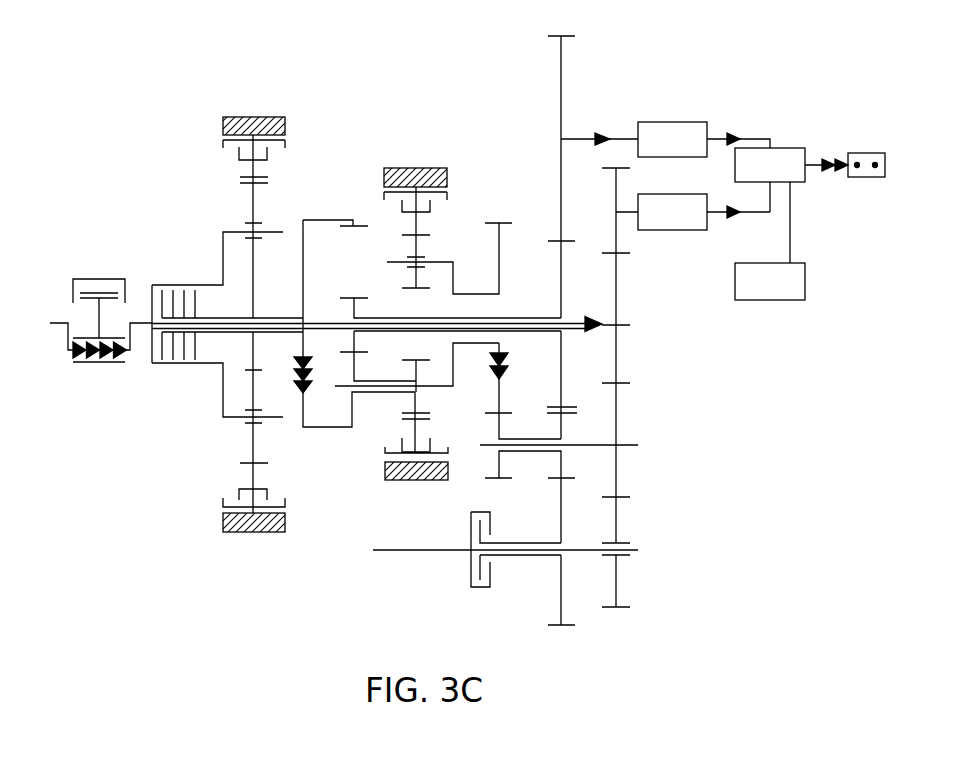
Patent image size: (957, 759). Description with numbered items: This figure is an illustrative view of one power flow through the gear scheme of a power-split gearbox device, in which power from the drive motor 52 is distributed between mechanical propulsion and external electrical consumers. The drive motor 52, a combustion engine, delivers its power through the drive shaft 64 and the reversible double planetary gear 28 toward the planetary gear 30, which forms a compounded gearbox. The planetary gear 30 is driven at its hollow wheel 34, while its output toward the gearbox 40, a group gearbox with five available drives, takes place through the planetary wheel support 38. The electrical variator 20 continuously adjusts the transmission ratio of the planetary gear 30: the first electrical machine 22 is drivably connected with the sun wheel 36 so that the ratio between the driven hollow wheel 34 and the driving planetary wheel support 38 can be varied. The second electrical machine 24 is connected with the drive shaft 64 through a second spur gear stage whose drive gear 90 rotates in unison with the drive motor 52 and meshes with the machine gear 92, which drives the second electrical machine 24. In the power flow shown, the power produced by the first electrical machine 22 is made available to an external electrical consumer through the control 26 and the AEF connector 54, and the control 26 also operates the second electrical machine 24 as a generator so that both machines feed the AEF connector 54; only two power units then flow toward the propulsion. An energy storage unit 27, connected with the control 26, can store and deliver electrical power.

The electrical variator 20 is at (722, 107).
The first electrical machine 22 is at (685, 151).
The second electrical machine 24 is at (685, 224).
The control 26 is at (782, 177).
The energy storage unit 27 is at (782, 294).
The reversible double planetary gear 28 is at (253, 110).
The planetary gear 30 is at (323, 203).
The hollow wheel 34 is at (415, 158).
The sun wheel 36 is at (354, 297).
The planetary wheel support 38 is at (388, 392).
The gearbox 40 is at (722, 446).
The drive motor 52 is at (97, 262).
The AEF connector 54 is at (872, 178).
The drive shaft 64 is at (143, 323).
The drive gear 90 is at (616, 337).
The machine gear 92 is at (616, 235).